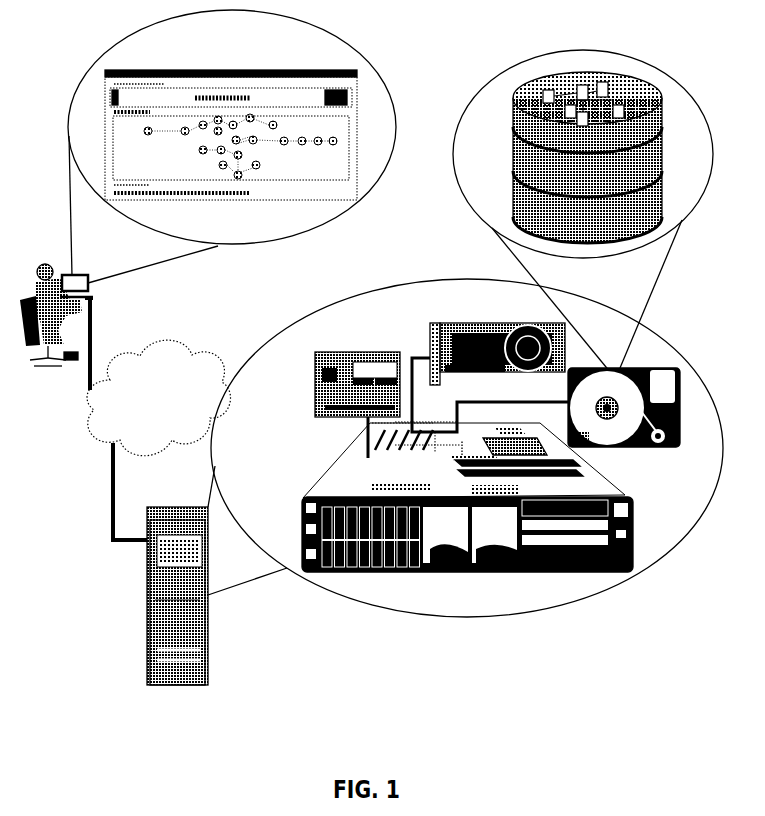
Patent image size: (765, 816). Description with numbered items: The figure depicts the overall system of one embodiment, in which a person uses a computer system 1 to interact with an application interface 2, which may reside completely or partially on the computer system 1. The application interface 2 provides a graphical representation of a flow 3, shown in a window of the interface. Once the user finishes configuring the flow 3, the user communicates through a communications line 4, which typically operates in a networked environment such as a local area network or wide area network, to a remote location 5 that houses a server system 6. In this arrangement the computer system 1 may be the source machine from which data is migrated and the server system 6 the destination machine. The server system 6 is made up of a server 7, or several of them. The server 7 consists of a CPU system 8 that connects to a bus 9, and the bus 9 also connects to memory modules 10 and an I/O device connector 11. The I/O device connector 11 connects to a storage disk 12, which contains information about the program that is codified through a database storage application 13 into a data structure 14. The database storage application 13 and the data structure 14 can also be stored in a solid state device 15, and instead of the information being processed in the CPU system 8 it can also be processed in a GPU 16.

The computer system 1 is at (63, 270).
The application interface 2 is at (186, 66).
The flow 3 is at (121, 152).
The communications line 4 is at (103, 338).
The remote location 5 is at (176, 348).
The server system 6 is at (142, 594).
The server 7 is at (353, 444).
The CPU system 8 is at (482, 436).
The bus 9 is at (471, 442).
The memory modules 10 is at (452, 472).
The I/O device connector 11 is at (435, 429).
The storage disk 12 is at (633, 367).
The database storage application 13 is at (508, 154).
The data structure 14 is at (540, 100).
The solid state device 15 is at (310, 356).
The GPU 16 is at (446, 326).